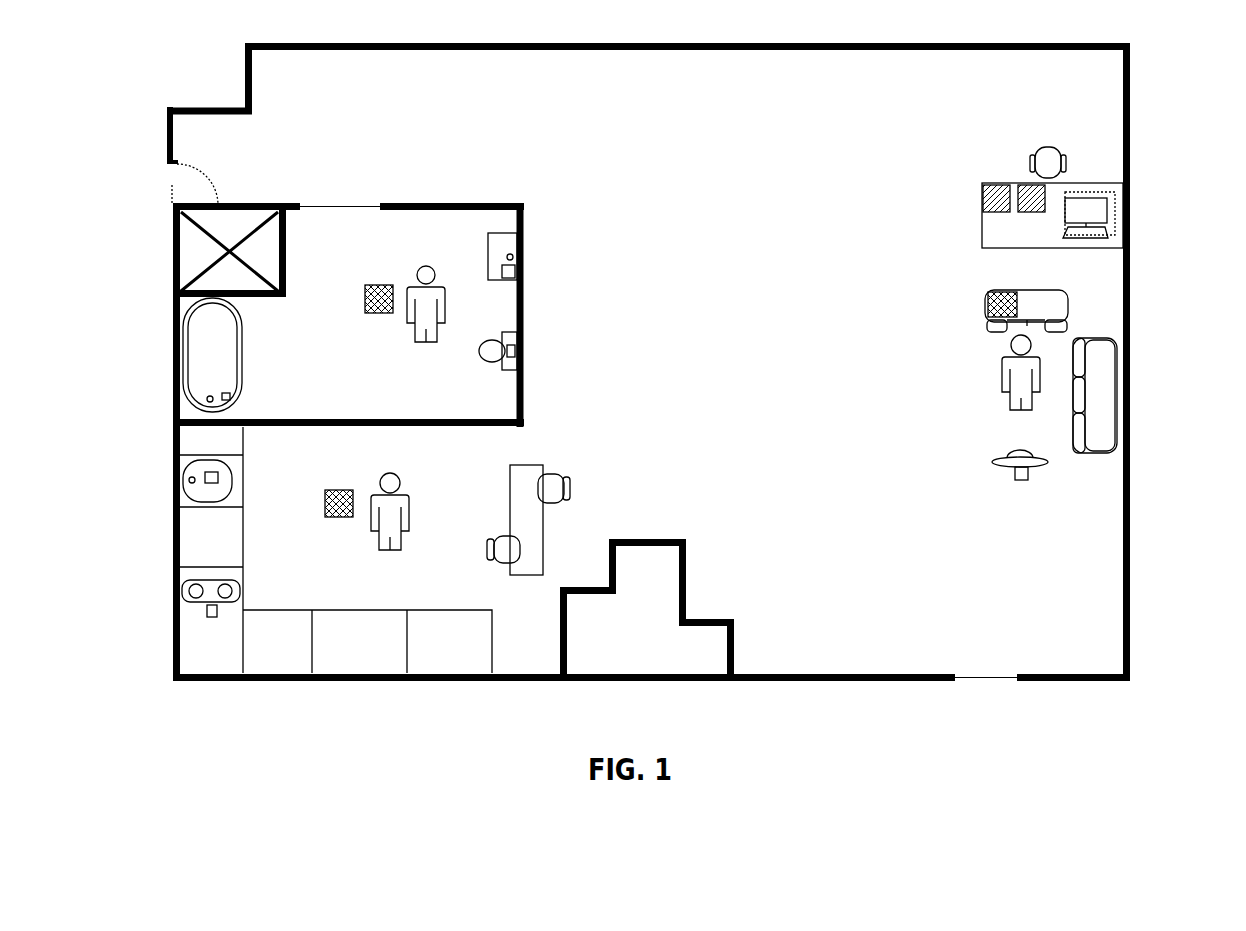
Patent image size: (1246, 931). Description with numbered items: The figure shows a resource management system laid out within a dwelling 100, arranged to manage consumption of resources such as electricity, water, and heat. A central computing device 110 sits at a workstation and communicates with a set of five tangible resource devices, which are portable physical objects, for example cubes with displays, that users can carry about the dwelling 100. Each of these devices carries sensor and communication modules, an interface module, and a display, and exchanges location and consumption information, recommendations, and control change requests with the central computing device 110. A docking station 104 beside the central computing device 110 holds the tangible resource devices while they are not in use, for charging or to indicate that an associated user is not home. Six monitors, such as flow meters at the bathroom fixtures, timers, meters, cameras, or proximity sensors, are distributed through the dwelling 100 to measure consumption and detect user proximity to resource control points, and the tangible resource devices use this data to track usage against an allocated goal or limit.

The dwelling 100 is at (1170, 100).
The docking station 104 is at (992, 235).
The central computing device 110 is at (1088, 208).